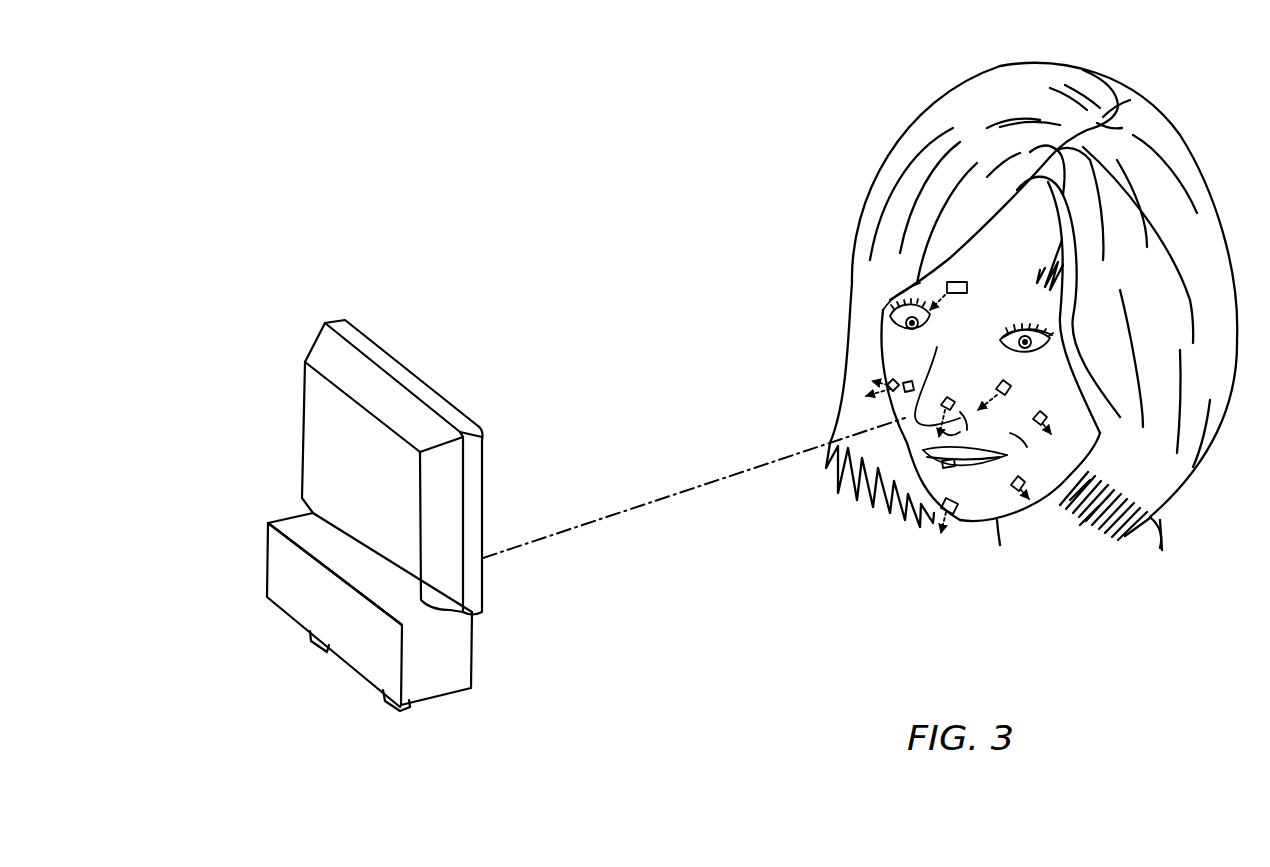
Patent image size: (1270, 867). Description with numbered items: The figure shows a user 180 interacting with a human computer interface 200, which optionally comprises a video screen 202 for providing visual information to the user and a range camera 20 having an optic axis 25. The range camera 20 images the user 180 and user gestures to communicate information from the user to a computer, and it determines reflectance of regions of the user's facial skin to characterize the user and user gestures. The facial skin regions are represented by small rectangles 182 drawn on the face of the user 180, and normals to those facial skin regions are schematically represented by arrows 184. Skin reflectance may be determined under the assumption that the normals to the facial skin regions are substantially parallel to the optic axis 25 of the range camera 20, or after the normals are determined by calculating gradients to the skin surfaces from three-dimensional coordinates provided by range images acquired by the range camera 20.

The range camera 20 is at (452, 710).
The optic axis 25 is at (680, 494).
The user 180 is at (957, 104).
The facial skin regions 182 is at (908, 384).
The arrows 184 is at (977, 413).
The human computer interface 200 is at (243, 306).
The video screen 202 is at (422, 372).